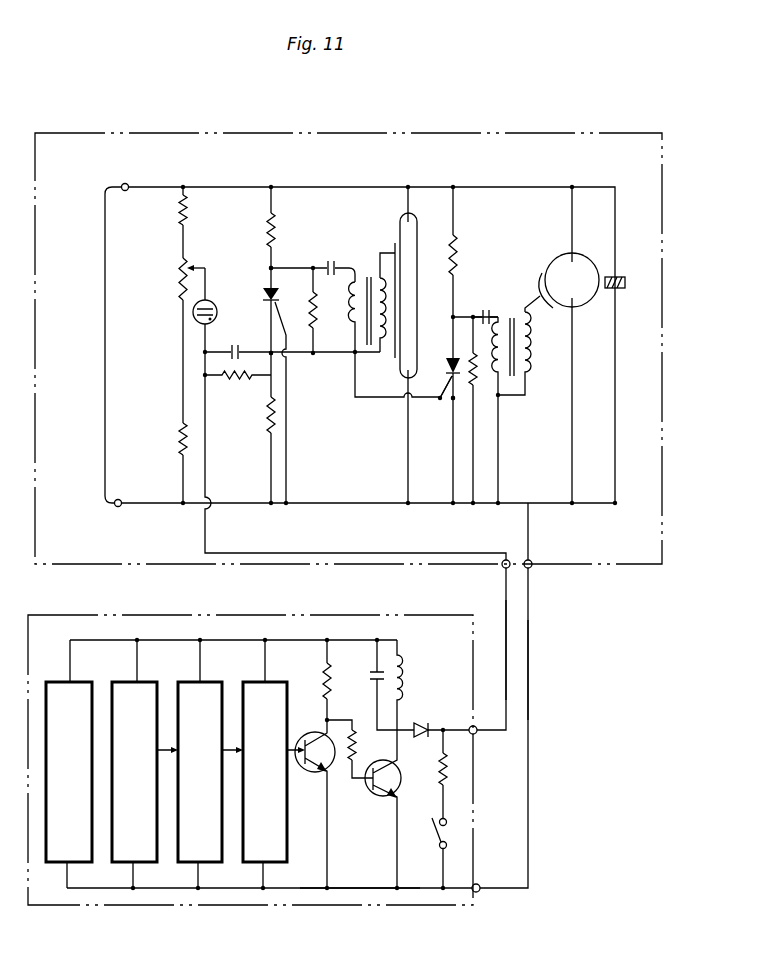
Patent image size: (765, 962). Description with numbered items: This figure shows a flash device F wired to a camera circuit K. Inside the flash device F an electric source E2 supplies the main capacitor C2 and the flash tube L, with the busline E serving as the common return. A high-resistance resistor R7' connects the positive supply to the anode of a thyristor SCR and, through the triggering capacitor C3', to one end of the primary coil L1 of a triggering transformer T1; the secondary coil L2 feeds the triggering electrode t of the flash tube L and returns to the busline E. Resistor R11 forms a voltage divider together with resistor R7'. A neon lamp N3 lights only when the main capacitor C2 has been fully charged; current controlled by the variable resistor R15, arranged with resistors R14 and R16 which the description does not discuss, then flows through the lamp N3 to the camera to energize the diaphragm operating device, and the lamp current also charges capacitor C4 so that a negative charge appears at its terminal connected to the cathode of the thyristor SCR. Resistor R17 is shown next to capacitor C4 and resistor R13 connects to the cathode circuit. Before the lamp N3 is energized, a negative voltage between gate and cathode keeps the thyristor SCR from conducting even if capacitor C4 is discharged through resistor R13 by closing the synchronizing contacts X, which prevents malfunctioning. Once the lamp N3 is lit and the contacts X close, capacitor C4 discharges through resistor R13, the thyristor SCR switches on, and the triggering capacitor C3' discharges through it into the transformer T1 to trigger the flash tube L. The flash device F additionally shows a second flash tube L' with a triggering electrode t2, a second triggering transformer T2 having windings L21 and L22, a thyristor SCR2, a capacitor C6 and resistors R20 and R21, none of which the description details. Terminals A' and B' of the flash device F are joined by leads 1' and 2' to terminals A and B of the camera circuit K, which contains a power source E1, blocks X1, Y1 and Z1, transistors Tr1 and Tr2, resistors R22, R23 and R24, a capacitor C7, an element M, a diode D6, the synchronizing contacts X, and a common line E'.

The flash device F is at (487, 133).
The busline E is at (370, 359).
The electric source E2 is at (105, 338).
The resistor R14 is at (166, 221).
The variable resistor R15 is at (175, 340).
The resistor R16 is at (163, 464).
The resistor R17 is at (238, 389).
The resistor R13 is at (251, 429).
The resistor of high resistance R7' is at (255, 227).
The neon lamp N3 is at (214, 322).
The capacitor C4 is at (238, 338).
The thyrister SCR is at (288, 311).
The triggering capacitor C3' is at (313, 255).
The resistor R11 is at (326, 311).
The trigger transformer T1 is at (366, 276).
The primary coil L1 is at (325, 333).
The secondary coil L2 is at (395, 326).
The triggering electrode t is at (390, 245).
The flash tube L is at (417, 345).
The resistor R20 is at (468, 251).
The silicon controlled rectifier SCR2 is at (438, 399).
The capacitor C6 is at (483, 305).
The resistor R21 is at (476, 392).
The trigger transformer T2 is at (512, 318).
The primary winding of T2 L21 is at (493, 352).
The secondary winding of T2 L22 is at (529, 350).
The trigger electrode t2 is at (539, 279).
The flash discharge tube L' is at (573, 345).
The main capacitor C2 is at (626, 285).
The terminal A' is at (357, 552).
The terminal B' is at (515, 695).
The connecting lead 1' is at (493, 650).
The connecting lead 2' is at (545, 670).
The terminal A is at (479, 721).
The terminal B is at (482, 879).
The camera K is at (170, 613).
The power source E1 is at (69, 764).
The circuit block X1 is at (145, 764).
The circuit block Y1 is at (210, 764).
The circuit block Z1 is at (274, 764).
The transistor Tr1 is at (314, 804).
The transistor Tr2 is at (381, 810).
The resistor R22 is at (309, 679).
The resistor R23 is at (356, 749).
The resistor R24 is at (426, 774).
The capacitor C7 is at (365, 684).
The electromagnet coil M is at (428, 660).
The diode D6 is at (427, 723).
The synchronizing contacts X is at (420, 854).
The common line E' is at (360, 865).